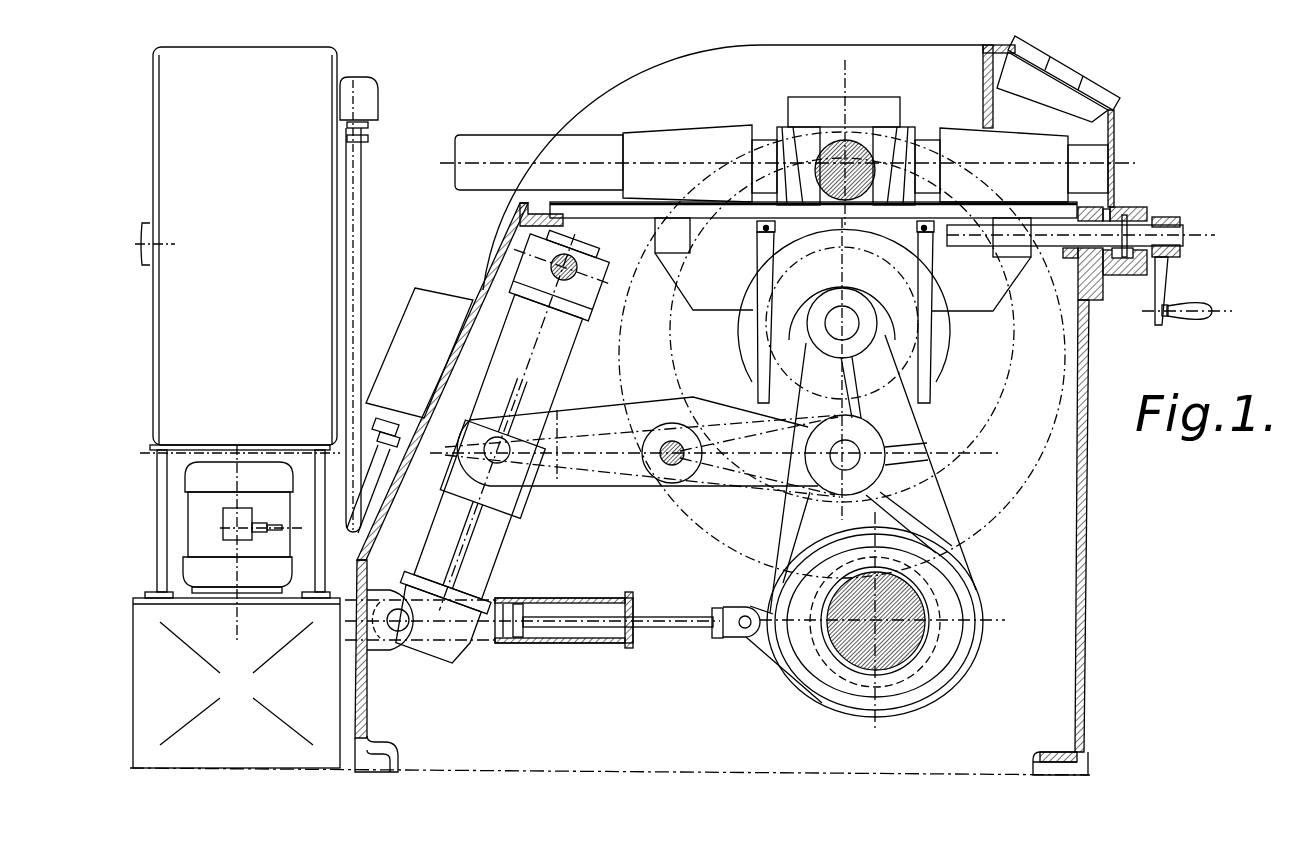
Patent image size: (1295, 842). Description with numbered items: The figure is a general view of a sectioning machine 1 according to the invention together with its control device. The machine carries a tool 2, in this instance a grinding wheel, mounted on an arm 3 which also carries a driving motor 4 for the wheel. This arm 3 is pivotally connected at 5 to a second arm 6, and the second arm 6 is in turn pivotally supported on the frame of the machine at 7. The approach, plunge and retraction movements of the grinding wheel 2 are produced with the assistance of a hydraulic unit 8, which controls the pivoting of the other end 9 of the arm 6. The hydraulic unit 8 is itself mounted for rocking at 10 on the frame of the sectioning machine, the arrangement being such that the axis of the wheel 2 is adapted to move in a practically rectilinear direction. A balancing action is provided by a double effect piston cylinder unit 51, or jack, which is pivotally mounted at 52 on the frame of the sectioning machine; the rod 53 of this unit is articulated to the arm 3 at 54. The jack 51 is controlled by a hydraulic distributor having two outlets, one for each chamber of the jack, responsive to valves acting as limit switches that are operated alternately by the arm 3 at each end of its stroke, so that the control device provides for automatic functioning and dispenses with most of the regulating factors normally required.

The sectioning machine 1 is at (518, 73).
The tool 2 is at (1008, 382).
The arm 3 is at (920, 497).
The driving motor 4 is at (927, 630).
The pivotal connection 5 is at (808, 484).
The second arm 6 is at (592, 486).
The pivotal support 7 is at (667, 468).
The hydraulic unit 8 is at (500, 338).
The other end of the arm 9 is at (483, 455).
The rocking mount 10 is at (587, 252).
The double effect piston cylinder unit 51 is at (590, 644).
The pivotal mounting 52 is at (400, 608).
The rod 53 is at (683, 618).
The articulation 54 is at (740, 636).